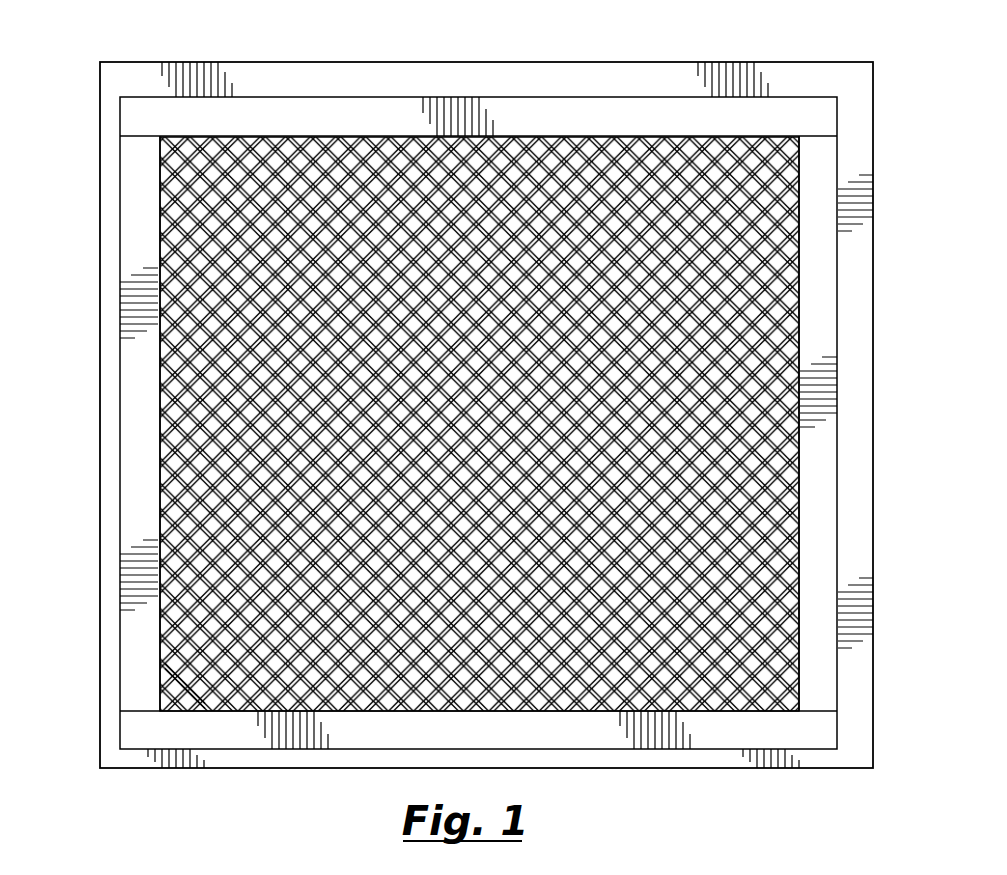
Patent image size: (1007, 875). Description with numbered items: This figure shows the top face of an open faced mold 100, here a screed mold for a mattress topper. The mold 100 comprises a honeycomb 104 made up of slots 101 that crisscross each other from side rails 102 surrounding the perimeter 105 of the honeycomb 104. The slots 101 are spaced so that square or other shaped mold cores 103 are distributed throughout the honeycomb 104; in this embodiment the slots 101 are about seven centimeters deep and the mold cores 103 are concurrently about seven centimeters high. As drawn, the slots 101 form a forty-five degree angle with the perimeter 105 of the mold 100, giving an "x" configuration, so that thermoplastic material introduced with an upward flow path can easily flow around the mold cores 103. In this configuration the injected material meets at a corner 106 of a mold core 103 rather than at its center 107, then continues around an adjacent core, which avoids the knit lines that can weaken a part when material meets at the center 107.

The open faced mold 100 is at (782, 50).
The slots 101 is at (778, 688).
The side rails 102 is at (250, 728).
The mold cores 103 is at (357, 683).
The honeycomb 104 is at (811, 137).
The perimeter 105 is at (572, 137).
The corner 106 is at (202, 698).
The center 107 is at (183, 686).